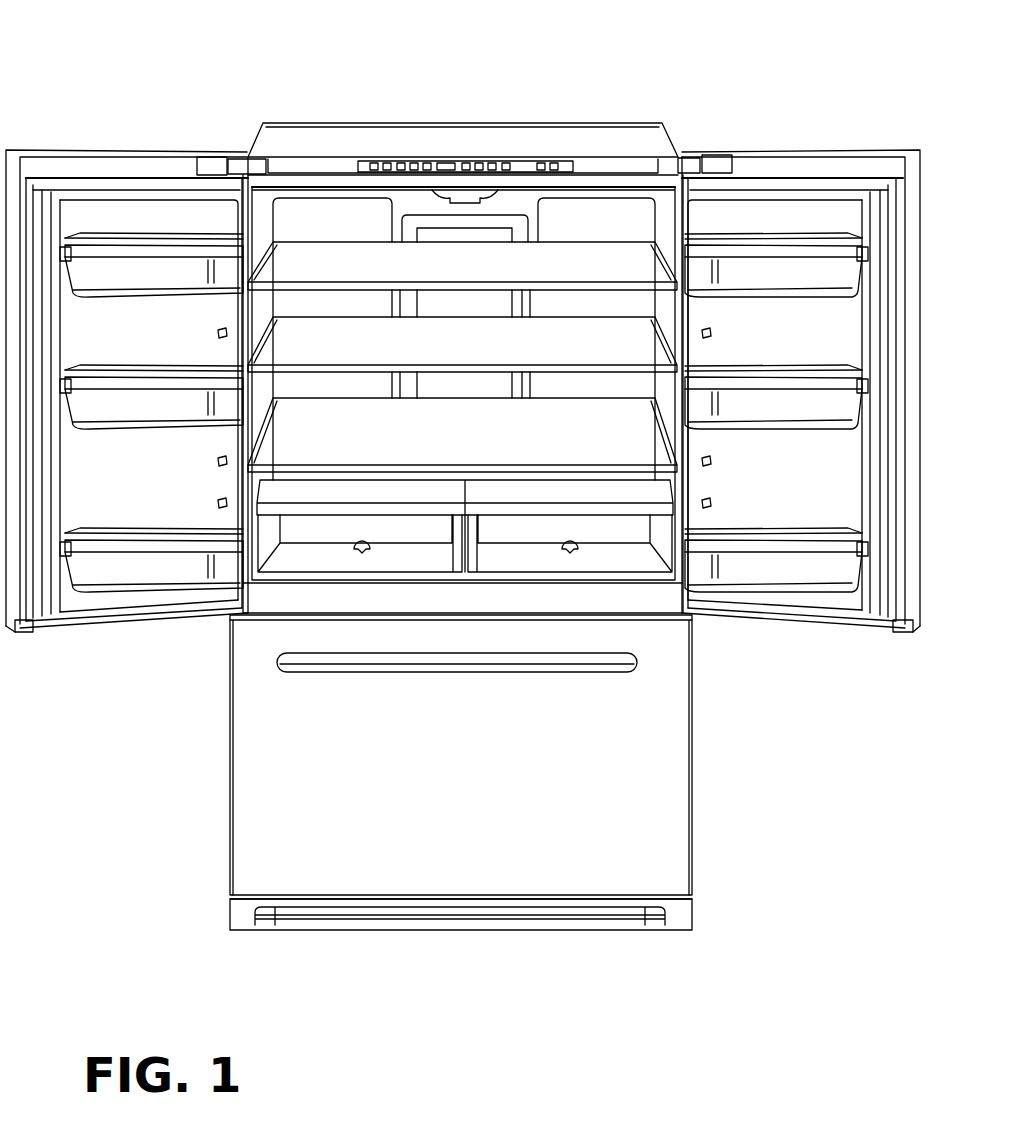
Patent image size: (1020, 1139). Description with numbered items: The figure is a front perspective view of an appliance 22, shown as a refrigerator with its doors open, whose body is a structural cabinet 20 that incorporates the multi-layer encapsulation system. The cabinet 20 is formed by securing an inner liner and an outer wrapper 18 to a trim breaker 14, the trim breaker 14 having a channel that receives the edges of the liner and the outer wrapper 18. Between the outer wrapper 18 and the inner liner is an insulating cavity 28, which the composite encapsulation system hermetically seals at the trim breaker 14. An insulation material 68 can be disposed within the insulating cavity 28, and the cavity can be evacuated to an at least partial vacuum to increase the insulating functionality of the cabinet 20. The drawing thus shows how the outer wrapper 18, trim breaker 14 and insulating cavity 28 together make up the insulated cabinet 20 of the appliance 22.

The appliance 22 is at (463, 472).
The structural cabinet 20 is at (463, 323).
The outer wrapper 18 is at (597, 142).
The insulating cavity 28 is at (336, 160).
The trim breaker 14 is at (613, 217).
The insulation material 68 is at (302, 603).